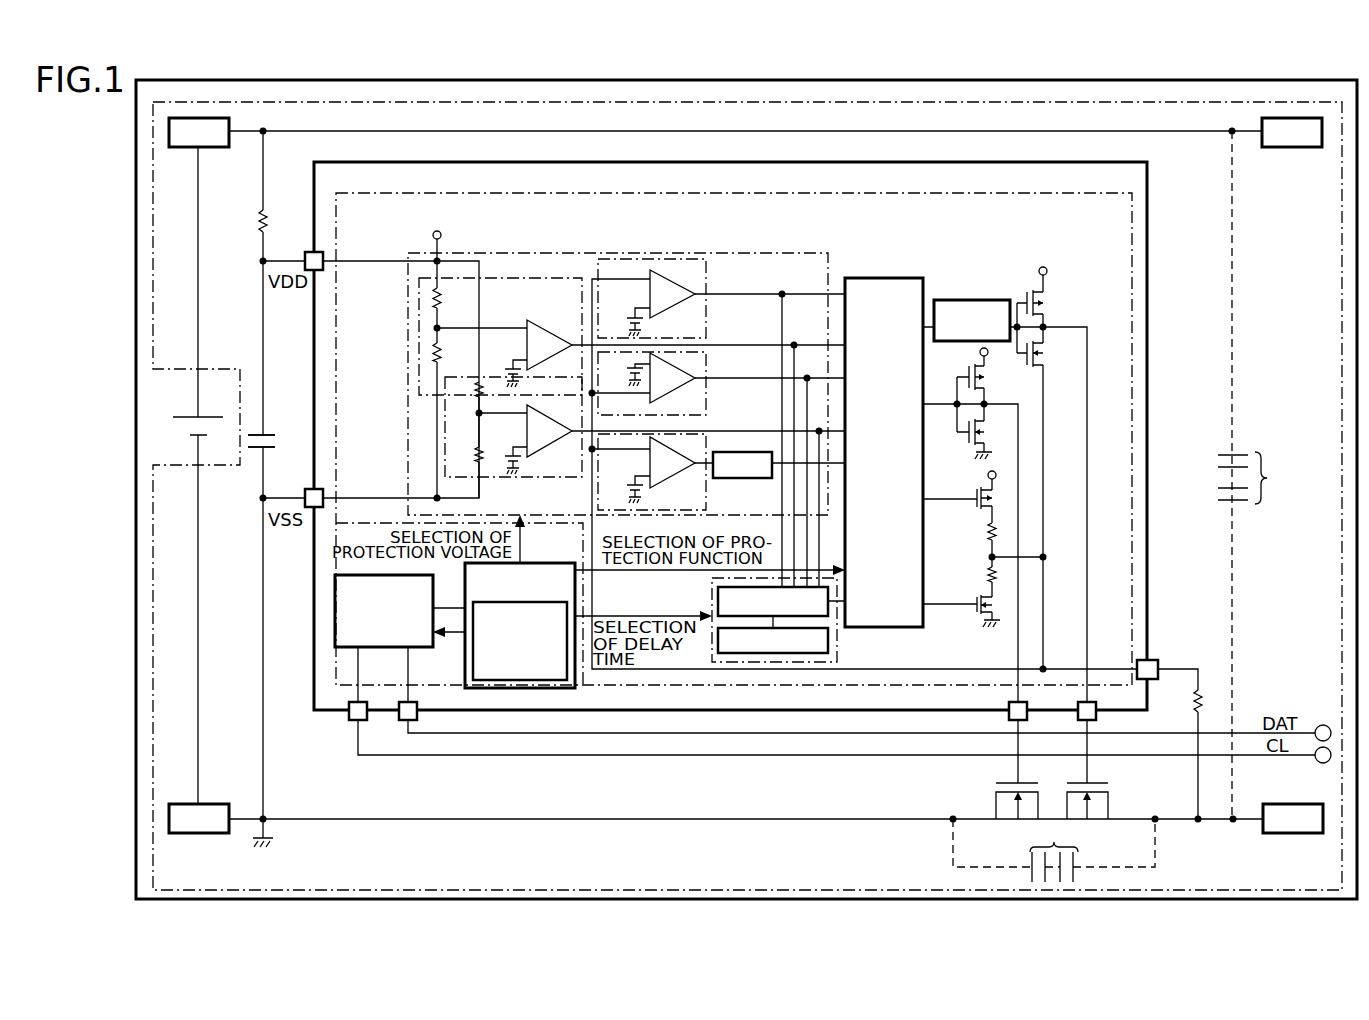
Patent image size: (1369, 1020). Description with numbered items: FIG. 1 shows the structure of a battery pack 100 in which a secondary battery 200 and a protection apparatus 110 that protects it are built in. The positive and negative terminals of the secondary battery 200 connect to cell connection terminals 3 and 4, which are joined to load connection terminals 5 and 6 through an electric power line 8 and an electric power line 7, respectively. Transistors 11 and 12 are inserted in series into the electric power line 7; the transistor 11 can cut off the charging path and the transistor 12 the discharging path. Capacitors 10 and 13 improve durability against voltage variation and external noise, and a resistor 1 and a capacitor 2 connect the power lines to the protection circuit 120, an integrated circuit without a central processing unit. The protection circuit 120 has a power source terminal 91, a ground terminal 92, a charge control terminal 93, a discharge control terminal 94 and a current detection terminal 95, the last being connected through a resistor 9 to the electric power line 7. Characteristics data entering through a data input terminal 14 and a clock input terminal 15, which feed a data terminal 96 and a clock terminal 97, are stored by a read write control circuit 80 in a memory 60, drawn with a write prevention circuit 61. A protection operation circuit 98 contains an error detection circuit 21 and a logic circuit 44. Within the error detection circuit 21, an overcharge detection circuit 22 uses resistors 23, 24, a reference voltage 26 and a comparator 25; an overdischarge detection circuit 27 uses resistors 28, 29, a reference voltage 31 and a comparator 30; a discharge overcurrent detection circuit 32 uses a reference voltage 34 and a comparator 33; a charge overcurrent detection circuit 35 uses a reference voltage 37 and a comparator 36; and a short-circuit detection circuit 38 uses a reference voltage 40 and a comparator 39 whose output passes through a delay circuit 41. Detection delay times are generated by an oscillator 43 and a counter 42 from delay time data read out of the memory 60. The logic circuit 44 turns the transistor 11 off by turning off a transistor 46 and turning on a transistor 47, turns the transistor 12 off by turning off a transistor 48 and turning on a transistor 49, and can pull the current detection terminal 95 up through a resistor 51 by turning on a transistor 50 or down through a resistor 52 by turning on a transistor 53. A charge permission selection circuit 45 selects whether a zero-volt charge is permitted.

The resistor 1 is at (258, 226).
The capacitor 2 is at (275, 432).
The cell connection terminal 3 is at (214, 147).
The cell connection terminal 4 is at (215, 833).
The load connection terminal 5 is at (1310, 147).
The load connection terminal 6 is at (1308, 834).
The electric power line 7 is at (632, 819).
The electric power line 8 is at (751, 131).
The resistor 9 is at (1190, 698).
The capacitor 10 is at (1054, 850).
The transistor 11 is at (1109, 783).
The transistor 12 is at (995, 783).
The capacitor 13 is at (1255, 478).
The data input terminal 14 is at (1323, 725).
The clock input terminal 15 is at (1323, 763).
The error detection circuit 21 is at (763, 252).
The overcharge detection circuit 22 is at (527, 273).
The resistor 23 is at (443, 297).
The resistor 24 is at (443, 350).
The comparator 25 is at (550, 362).
The reference voltage 26 is at (507, 368).
The overdischarge detection circuit 27 is at (528, 492).
The resistor 28 is at (478, 398).
The resistor 29 is at (478, 457).
The comparator 30 is at (552, 449).
The reference voltage 31 is at (508, 453).
The discharge overcurrent detection circuit 32 is at (712, 273).
The comparator 33 is at (664, 273).
The reference voltage 34 is at (628, 322).
The charge overcurrent detection circuit 35 is at (712, 357).
The comparator 36 is at (664, 394).
The reference voltage 37 is at (634, 371).
The short-circuit detection circuit 38 is at (711, 498).
The comparator 39 is at (664, 477).
The reference voltage 40 is at (628, 500).
The delay circuit 41 is at (742, 452).
The counter 42 is at (712, 603).
The oscillator 43 is at (838, 641).
The logic circuit 44 is at (874, 278).
The charge permission selection circuit 45 is at (965, 298).
The transistor 46 is at (1025, 293).
The transistor 47 is at (1024, 361).
The transistor 48 is at (965, 368).
The transistor 49 is at (964, 440).
The transistor 50 is at (975, 491).
The resistor 51 is at (986, 526).
The resistor 52 is at (986, 572).
The transistor 53 is at (974, 608).
The memory 60 is at (540, 564).
The write prevention circuit 61 is at (511, 680).
The read write control circuit 80 is at (393, 647).
The power source terminal 91 is at (304, 256).
The ground terminal 92 is at (304, 495).
The charge control terminal 93 is at (1097, 702).
The discharge control terminal 94 is at (1008, 702).
The current detection terminal 95 is at (1161, 678).
The data terminal 96 is at (418, 702).
The clock terminal 97 is at (348, 702).
The protection operation circuit 98 is at (1077, 192).
The battery pack 100 is at (1295, 81).
The protection apparatus 110 is at (1207, 100).
The protection circuit 120 is at (1098, 162).
The secondary battery 200 is at (180, 415).